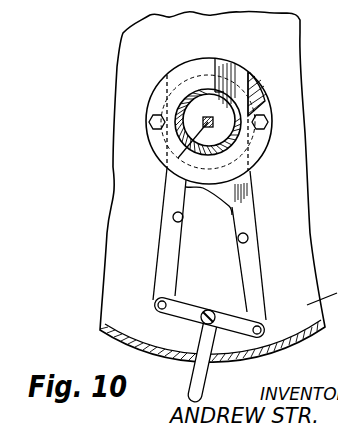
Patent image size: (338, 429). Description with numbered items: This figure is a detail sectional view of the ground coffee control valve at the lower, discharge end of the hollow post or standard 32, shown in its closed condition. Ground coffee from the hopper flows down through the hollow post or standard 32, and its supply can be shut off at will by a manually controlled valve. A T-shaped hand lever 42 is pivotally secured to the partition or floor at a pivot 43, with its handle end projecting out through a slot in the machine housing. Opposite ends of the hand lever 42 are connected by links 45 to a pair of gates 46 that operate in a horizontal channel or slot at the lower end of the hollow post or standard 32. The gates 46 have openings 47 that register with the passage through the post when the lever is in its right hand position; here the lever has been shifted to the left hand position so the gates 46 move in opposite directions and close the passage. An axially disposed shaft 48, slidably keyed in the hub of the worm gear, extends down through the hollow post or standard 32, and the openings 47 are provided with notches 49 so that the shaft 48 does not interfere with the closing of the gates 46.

The hollow post or standard 32 is at (240, 123).
The T-shaped hand lever 42 is at (195, 382).
The pivot 43 is at (208, 310).
The links 45 is at (170, 261).
The gates 46 is at (174, 200).
The openings 47 is at (215, 92).
The axially disposed shaft 48 is at (205, 125).
The notches 49 is at (207, 142).